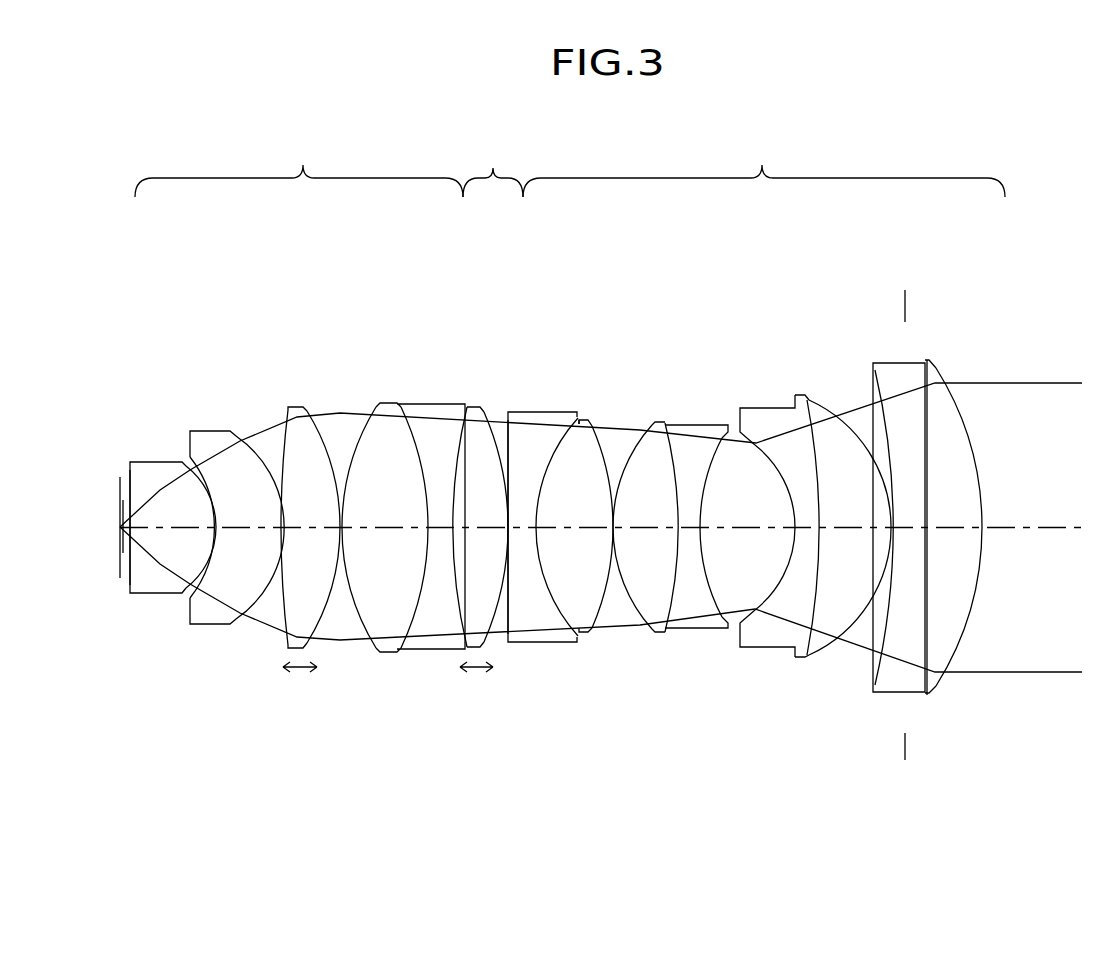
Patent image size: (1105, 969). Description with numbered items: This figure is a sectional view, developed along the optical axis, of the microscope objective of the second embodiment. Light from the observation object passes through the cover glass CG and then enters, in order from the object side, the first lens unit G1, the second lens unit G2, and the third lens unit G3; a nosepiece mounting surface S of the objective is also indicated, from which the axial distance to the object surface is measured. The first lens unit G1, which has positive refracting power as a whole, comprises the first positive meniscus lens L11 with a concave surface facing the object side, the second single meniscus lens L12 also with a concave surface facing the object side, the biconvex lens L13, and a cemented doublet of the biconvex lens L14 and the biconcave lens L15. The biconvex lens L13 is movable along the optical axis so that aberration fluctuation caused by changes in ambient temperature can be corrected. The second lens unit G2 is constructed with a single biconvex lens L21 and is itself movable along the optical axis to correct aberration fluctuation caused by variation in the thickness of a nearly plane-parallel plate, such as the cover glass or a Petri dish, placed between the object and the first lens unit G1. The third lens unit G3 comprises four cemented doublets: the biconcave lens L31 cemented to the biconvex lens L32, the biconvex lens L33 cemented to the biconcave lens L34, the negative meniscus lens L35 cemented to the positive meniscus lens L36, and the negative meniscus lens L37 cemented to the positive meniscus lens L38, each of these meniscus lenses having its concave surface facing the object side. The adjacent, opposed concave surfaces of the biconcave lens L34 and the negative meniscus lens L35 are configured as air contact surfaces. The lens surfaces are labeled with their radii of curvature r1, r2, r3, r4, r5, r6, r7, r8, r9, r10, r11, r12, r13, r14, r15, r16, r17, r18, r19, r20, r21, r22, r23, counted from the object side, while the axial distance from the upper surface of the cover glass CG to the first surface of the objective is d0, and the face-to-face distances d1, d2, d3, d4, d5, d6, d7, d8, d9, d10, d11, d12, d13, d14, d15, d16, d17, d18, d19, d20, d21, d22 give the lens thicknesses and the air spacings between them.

The first lens unit G1 is at (299, 165).
The second lens unit G2 is at (493, 165).
The third lens unit G3 is at (764, 165).
The cover glass CG is at (121, 527).
The nosepiece mounting surface S is at (903, 525).
The first positive meniscus lens L11 is at (155, 462).
The second single meniscus lens L12 is at (208, 431).
The biconvex lens L13 is at (297, 407).
The biconvex lens L14 is at (388, 403).
The biconcave lens L15 is at (473, 407).
The biconvex lens L21 is at (512, 412).
The biconcave lens L31 is at (583, 420).
The biconvex lens L32 is at (656, 422).
The biconvex lens L33 is at (690, 425).
The biconcave lens L34 is at (773, 413).
The negative meniscus lens L35 is at (797, 425).
The positive meniscus lens L36 is at (808, 395).
The negative meniscus lens L37 is at (880, 363).
The positive meniscus lens L38 is at (930, 360).
The radius of curvature r1 is at (131, 475).
The radius of curvature r2 is at (180, 462).
The radius of curvature r3 is at (215, 446).
The radius of curvature r4 is at (235, 432).
The radius of curvature r5 is at (287, 410).
The radius of curvature r6 is at (306, 411).
The radius of curvature r7 is at (376, 407).
The radius of curvature r8 is at (401, 407).
The radius of curvature r9 is at (466, 407).
The radius of curvature r10 is at (484, 412).
The radius of curvature r11 is at (509, 413).
The radius of curvature r12 is at (577, 418).
The radius of curvature r13 is at (580, 421).
The radius of curvature r14 is at (592, 426).
The radius of curvature r15 is at (650, 425).
The radius of curvature r16 is at (667, 423).
The radius of curvature r17 is at (722, 438).
The radius of curvature r18 is at (755, 440).
The radius of curvature r19 is at (802, 393).
The radius of curvature r20 is at (847, 425).
The radius of curvature r21 is at (876, 368).
The radius of curvature r22 is at (925, 362).
The radius of curvature r23 is at (938, 368).
The distance from cover glass to first surface d0 is at (124, 530).
The face-to-face distance d1 is at (160, 530).
The face-to-face distance d2 is at (209, 530).
The face-to-face distance d3 is at (247, 530).
The face-to-face distance d4 is at (275, 530).
The face-to-face distance d5 is at (310, 530).
The face-to-face distance d6 is at (341, 530).
The face-to-face distance d7 is at (383, 530).
The face-to-face distance d8 is at (440, 530).
The face-to-face distance d9 is at (485, 530).
The face-to-face distance d10 is at (509, 530).
The face-to-face distance d11 is at (522, 530).
The face-to-face distance d12 is at (536, 530).
The face-to-face distance d13 is at (585, 530).
The face-to-face distance d14 is at (617, 530).
The face-to-face distance d15 is at (657, 530).
The face-to-face distance d16 is at (695, 530).
The face-to-face distance d17 is at (745, 530).
The face-to-face distance d18 is at (800, 530).
The face-to-face distance d19 is at (818, 530).
The face-to-face distance d20 is at (843, 530).
The face-to-face distance d21 is at (887, 530).
The face-to-face distance d22 is at (903, 530).